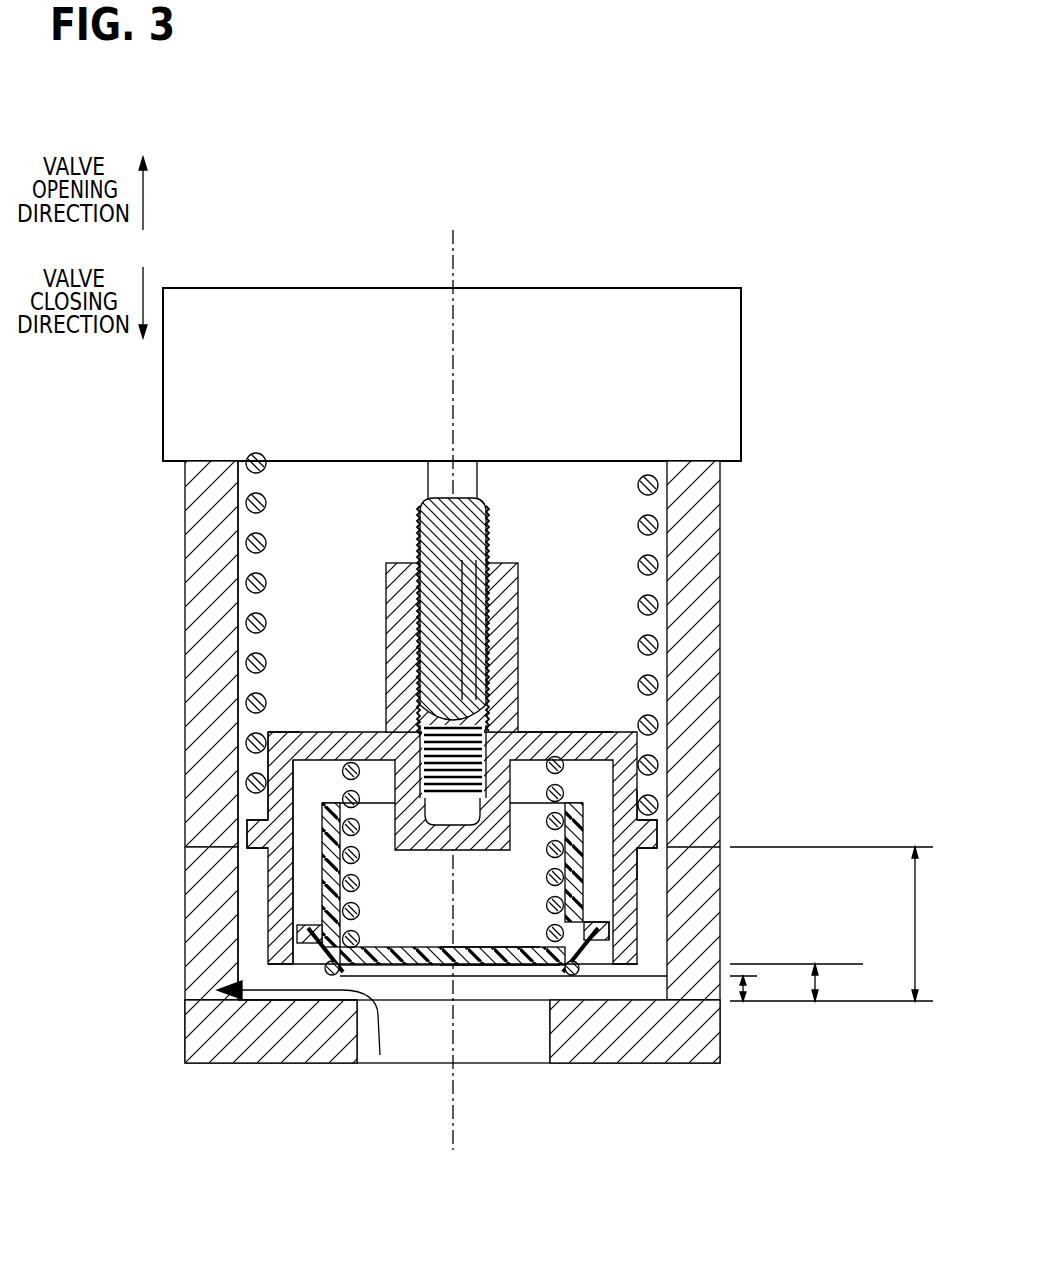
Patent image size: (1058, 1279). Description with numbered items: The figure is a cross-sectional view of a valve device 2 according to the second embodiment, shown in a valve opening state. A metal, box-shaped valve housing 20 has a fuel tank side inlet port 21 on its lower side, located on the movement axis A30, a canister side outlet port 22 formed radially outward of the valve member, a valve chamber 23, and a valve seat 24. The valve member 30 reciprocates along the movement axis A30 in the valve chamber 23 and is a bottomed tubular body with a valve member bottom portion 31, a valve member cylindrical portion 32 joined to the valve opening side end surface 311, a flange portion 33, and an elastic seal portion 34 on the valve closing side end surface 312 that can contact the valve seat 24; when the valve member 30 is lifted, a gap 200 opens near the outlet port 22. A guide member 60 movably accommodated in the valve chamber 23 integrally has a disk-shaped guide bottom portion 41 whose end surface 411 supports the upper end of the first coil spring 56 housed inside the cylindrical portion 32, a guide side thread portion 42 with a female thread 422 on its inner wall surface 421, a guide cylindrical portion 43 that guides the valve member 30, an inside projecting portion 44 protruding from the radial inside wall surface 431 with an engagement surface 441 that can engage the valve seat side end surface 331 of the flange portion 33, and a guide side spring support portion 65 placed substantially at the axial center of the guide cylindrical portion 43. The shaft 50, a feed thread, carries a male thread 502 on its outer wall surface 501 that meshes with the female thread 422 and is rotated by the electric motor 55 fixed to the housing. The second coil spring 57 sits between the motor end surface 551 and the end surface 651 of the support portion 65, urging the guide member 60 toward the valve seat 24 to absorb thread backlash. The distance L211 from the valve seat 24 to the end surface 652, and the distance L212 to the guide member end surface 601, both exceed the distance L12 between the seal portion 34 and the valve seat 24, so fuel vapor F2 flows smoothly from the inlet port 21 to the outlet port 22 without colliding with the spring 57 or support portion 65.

The valve device 2 is at (740, 262).
The movement axis A30 is at (457, 263).
The valve housing 20 is at (180, 569).
The fuel tank side inlet port 21 is at (412, 1040).
The canister side outlet port 22 is at (190, 899).
The valve chamber 23 is at (305, 640).
The valve seat 24 is at (590, 1000).
The valve member 30 is at (318, 819).
The valve member bottom portion 31 is at (488, 966).
The valve opening side end surface 311 is at (490, 947).
The valve closing side end surface 312 is at (520, 966).
The valve member cylindrical portion 32 is at (255, 835).
The flange portion 33 is at (300, 935).
The valve seat side end surface 331 is at (330, 968).
The seal portion 34 is at (307, 1005).
The gap 200 is at (333, 1003).
The guide bottom portion 41 is at (550, 745).
The end surface 411 is at (560, 752).
The guide side thread portion 42 is at (518, 578).
The inner wall surface 421 is at (468, 615).
The female thread 422 is at (483, 525).
The guide cylindrical portion 43 is at (270, 780).
The radial inside wall surface 431 is at (275, 738).
The inside projecting portion 44 is at (600, 955).
The engagement surface 441 is at (607, 935).
The shaft 50 is at (428, 473).
The outer wall surface 501 is at (420, 528).
The male thread 502 is at (420, 548).
The electric motor 55 is at (720, 376).
The end surface 551 is at (617, 462).
The first coil spring 56 is at (585, 870).
The second coil spring 57 is at (652, 524).
The guide member 60 is at (250, 771).
The end surface 601 is at (600, 972).
The guide side spring support portion 65 is at (655, 832).
The end surface 651 is at (640, 805).
The end surface 652 is at (660, 847).
The fuel vapor flow F2 is at (298, 1044).
The distance L211 is at (915, 922).
The distance L212 is at (815, 985).
The distance L12 is at (743, 988).